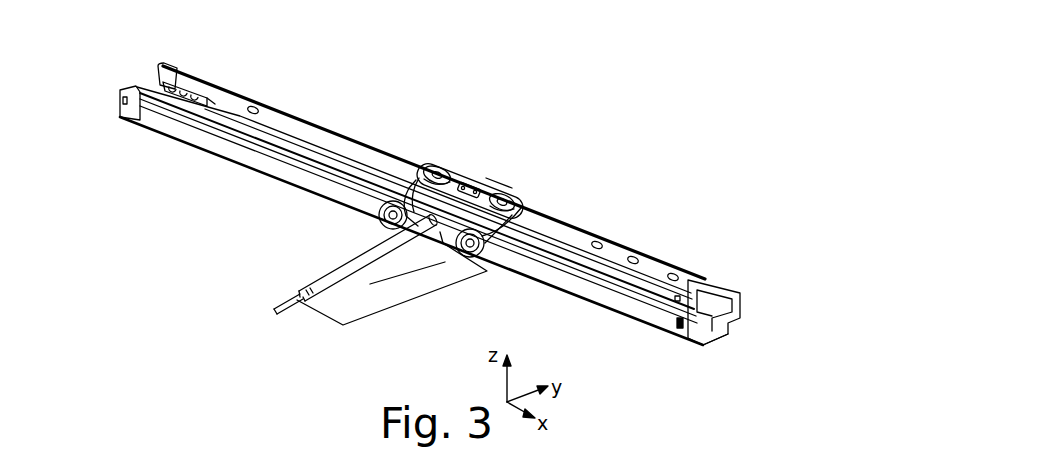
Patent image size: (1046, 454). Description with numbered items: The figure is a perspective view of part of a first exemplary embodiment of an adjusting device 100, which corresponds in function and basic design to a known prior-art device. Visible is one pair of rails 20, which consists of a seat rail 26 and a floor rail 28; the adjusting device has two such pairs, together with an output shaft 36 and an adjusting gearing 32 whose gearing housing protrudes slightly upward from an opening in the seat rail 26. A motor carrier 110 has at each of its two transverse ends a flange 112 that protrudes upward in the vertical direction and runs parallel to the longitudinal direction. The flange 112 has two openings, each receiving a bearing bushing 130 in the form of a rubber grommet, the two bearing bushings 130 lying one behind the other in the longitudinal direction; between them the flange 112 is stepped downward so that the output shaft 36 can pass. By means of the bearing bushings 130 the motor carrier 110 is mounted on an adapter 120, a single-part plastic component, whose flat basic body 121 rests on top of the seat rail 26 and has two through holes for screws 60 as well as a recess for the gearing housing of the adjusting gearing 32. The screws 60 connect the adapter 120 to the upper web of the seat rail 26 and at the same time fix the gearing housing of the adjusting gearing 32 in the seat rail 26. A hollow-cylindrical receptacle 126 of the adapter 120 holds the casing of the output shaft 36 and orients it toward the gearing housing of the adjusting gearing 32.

The pair of rails 20 is at (125, 63).
The seat rail 26 is at (692, 280).
The floor rail 28 is at (717, 337).
The adjusting gearing 32 is at (505, 192).
The output shaft 36 is at (310, 282).
The screws 60 is at (447, 173).
The adjusting device 100 is at (653, 145).
The motor carrier 110 is at (347, 307).
The flange 112 is at (392, 197).
The adapter 120 is at (418, 172).
The basic body 121 is at (524, 207).
The hollow-cylindrical receptacle 126 is at (470, 185).
The bearing bushing 130 is at (378, 220).